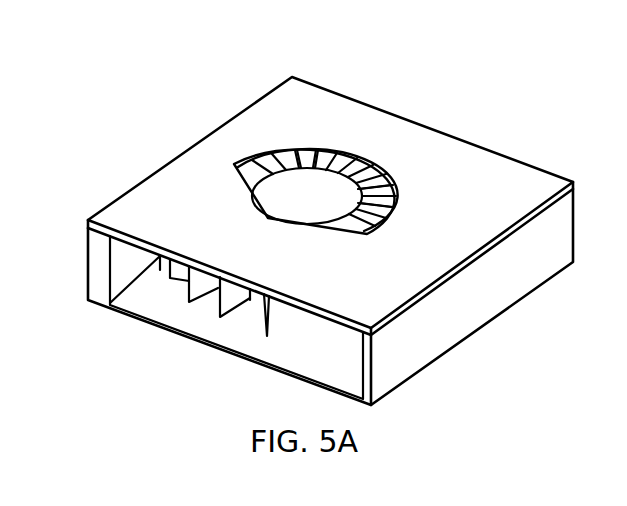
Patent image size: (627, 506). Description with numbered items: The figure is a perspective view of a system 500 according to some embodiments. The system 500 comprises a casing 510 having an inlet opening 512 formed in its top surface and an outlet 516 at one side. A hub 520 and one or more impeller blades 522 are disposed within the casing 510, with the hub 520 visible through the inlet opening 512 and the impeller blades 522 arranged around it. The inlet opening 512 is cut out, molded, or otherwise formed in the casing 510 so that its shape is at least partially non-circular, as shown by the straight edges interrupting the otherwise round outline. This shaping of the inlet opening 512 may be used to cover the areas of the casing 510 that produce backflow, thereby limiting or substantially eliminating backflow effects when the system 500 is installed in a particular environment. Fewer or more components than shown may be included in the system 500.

The system 500 is at (306, 225).
The casing 510 is at (526, 296).
The inlet opening 512 is at (302, 146).
The outlet 516 is at (108, 278).
The hub 520 is at (315, 192).
The impeller blades 522 is at (262, 310).